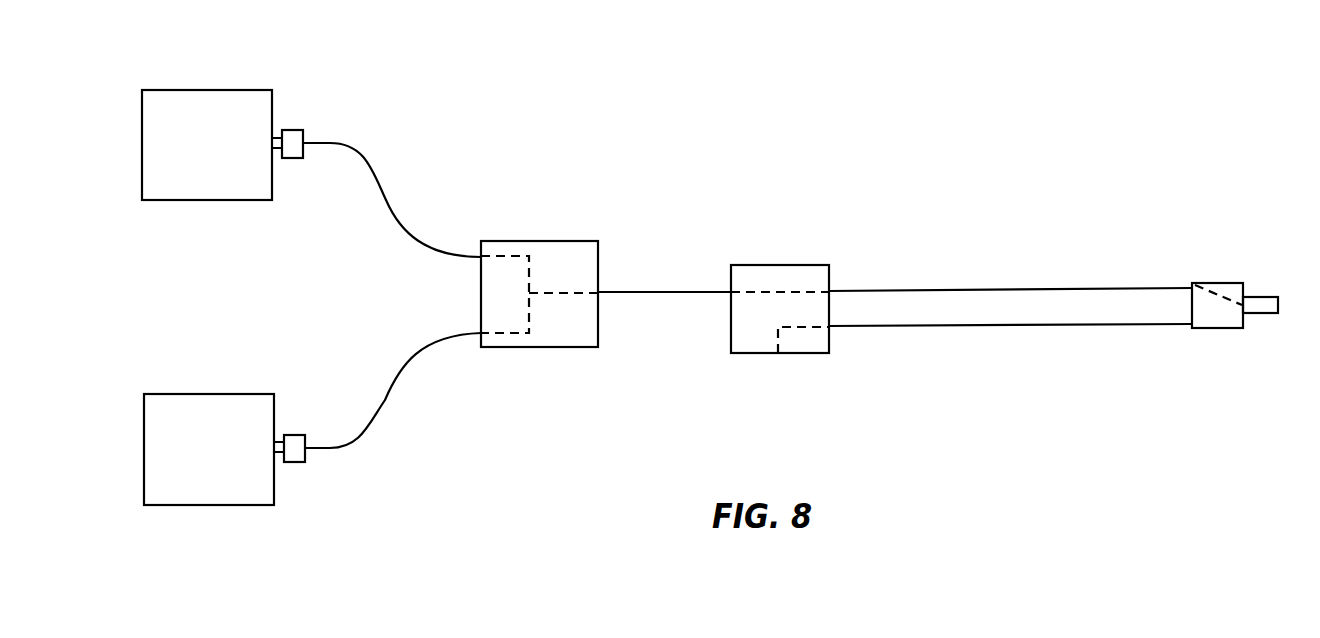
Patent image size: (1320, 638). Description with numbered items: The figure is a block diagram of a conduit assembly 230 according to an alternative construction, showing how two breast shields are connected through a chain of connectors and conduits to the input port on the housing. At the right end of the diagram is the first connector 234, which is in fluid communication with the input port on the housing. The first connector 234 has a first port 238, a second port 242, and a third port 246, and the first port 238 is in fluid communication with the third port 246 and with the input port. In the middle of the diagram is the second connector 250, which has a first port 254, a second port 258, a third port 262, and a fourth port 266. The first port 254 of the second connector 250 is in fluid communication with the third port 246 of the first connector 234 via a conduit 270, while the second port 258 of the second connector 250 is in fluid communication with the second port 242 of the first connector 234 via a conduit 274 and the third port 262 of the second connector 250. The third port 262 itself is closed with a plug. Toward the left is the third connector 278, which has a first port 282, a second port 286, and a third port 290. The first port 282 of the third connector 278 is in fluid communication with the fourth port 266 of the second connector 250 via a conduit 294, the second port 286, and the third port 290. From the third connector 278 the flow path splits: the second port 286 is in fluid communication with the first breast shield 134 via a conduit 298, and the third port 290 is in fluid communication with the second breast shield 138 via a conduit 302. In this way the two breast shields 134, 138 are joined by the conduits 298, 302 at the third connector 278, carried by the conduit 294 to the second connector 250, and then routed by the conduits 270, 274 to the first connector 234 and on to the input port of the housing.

The conduit assembly 230 is at (867, 128).
The second breast shield 138 is at (212, 200).
The first breast shield 134 is at (215, 505).
The conduit 302 is at (365, 157).
The conduit 298 is at (375, 427).
The third connector 278 is at (539, 241).
The third port 290 is at (480, 257).
The second port 286 is at (480, 333).
The first port 282 is at (598, 292).
The conduit 294 is at (640, 295).
The second connector 250 is at (763, 265).
The fourth port 266 is at (731, 291).
The first port 254 is at (829, 291).
The second port 258 is at (829, 325).
The third port 262 is at (778, 353).
The conduit 270 is at (950, 290).
The conduit 274 is at (960, 325).
The first connector 234 is at (1214, 283).
The third port 246 is at (1192, 288).
The second port 242 is at (1192, 328).
The first port 238 is at (1240, 305).